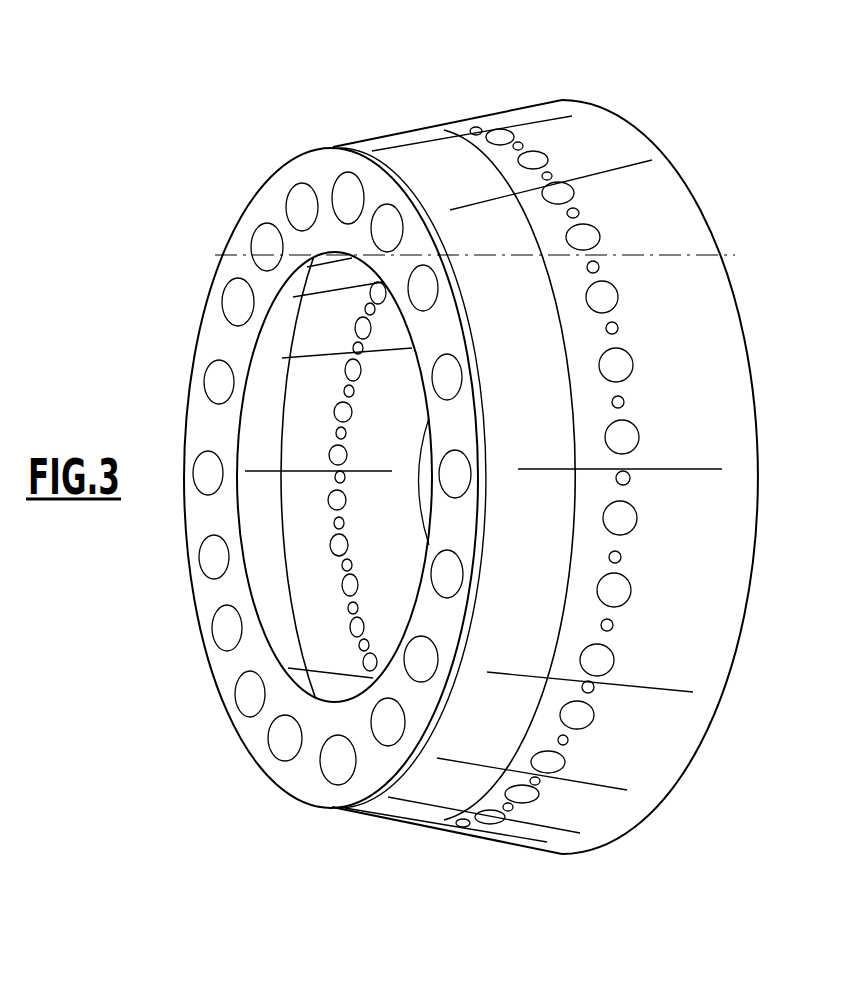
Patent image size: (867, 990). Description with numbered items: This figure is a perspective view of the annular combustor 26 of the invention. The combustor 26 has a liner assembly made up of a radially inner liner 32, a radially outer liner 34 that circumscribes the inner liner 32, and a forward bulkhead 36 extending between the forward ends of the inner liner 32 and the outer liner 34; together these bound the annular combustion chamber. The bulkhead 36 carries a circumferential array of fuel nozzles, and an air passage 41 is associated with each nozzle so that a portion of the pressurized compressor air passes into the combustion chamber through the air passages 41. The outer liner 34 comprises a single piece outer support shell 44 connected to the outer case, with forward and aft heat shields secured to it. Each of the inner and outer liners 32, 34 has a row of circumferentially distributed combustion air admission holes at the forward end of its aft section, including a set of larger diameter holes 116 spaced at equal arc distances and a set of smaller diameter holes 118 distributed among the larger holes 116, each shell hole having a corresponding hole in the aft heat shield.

The combustor 26 is at (476, 98).
The radially inner liner 32 is at (313, 367).
The radially outer liner 34 is at (403, 823).
The bulkhead 36 is at (278, 173).
The air passage 41 is at (350, 181).
The outer support shell 44 is at (662, 753).
The larger diameter holes 116 is at (343, 458).
The smaller diameter holes 118 is at (350, 565).